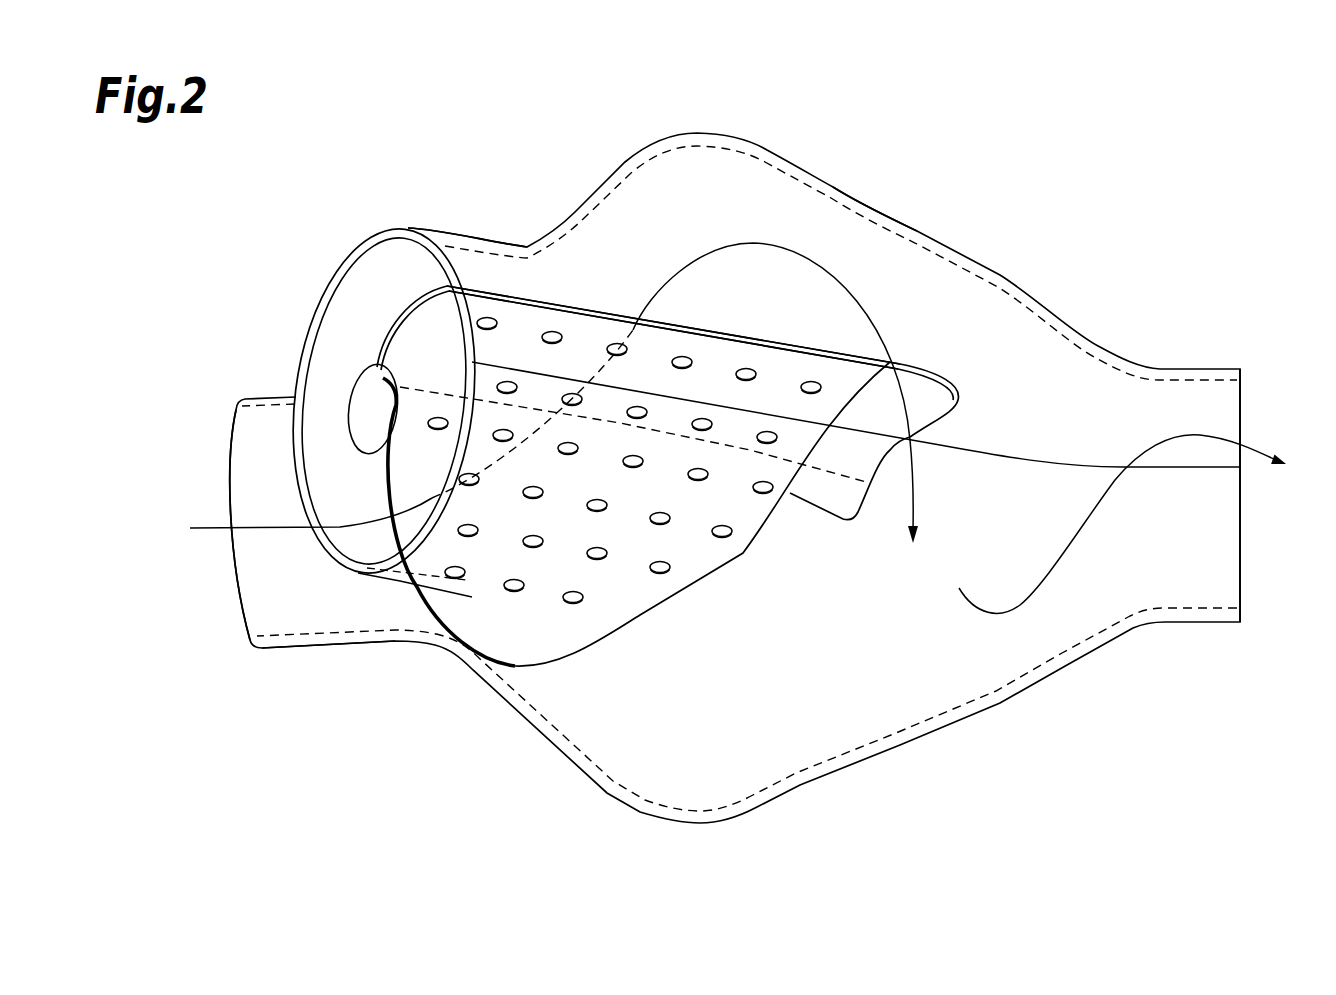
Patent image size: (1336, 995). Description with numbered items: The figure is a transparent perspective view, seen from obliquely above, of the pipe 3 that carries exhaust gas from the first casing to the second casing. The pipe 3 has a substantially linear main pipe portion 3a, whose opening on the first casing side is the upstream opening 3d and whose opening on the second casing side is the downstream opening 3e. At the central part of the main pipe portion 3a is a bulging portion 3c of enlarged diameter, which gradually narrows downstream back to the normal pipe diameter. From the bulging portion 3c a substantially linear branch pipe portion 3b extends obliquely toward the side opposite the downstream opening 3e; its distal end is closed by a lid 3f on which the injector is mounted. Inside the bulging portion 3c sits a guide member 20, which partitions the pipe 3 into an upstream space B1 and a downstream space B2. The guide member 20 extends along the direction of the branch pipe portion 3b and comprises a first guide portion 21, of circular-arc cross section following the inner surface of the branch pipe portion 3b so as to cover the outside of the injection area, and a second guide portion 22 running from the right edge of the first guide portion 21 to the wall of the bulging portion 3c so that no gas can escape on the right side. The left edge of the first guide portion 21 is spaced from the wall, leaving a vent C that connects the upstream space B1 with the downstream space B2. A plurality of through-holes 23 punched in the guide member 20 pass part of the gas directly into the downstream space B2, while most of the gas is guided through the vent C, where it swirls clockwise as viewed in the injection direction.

The pipe 3 is at (262, 242).
The main pipe portion 3a is at (312, 650).
The branch pipe portion 3b is at (469, 243).
The bulging portion 3c is at (868, 196).
The upstream opening 3d is at (230, 594).
The downstream opening 3e is at (1242, 527).
The lid 3f is at (392, 283).
The guide member 20 is at (743, 563).
The first guide portion 21 is at (556, 318).
The second guide portion 22 is at (666, 584).
The through-holes 23 is at (574, 605).
The vent C is at (775, 315).
The upstream space B1 is at (352, 619).
The downstream space B2 is at (899, 652).